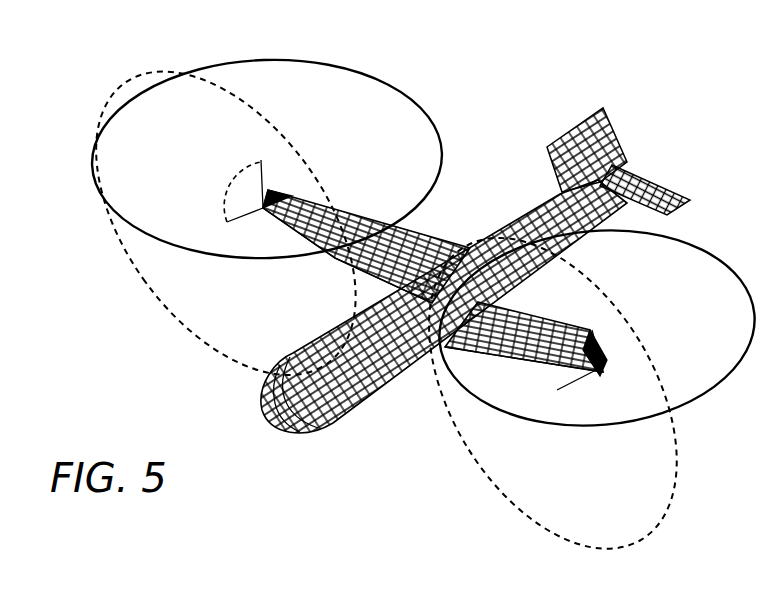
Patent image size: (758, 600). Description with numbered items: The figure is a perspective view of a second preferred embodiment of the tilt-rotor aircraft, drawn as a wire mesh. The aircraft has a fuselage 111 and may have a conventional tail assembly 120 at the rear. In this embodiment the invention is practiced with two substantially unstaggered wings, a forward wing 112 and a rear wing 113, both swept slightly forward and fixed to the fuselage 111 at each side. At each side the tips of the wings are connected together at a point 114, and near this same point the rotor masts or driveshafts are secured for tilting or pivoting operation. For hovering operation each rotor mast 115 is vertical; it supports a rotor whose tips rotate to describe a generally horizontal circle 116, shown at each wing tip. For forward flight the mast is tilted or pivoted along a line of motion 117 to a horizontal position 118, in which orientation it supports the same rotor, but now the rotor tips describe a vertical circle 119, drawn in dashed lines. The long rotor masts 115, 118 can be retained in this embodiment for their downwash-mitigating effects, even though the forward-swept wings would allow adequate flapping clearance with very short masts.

The fuselage 111 is at (396, 392).
The forward wing 112 is at (452, 250).
The rear wing 113 is at (340, 264).
The point 114 is at (281, 188).
The rotor mast 115 is at (268, 160).
The horizontal circle 116 is at (426, 108).
The line of motion 117 is at (233, 193).
The horizontal position of mast 118 is at (249, 215).
The vertical circle 119 is at (178, 326).
The tail assembly 120 is at (528, 152).